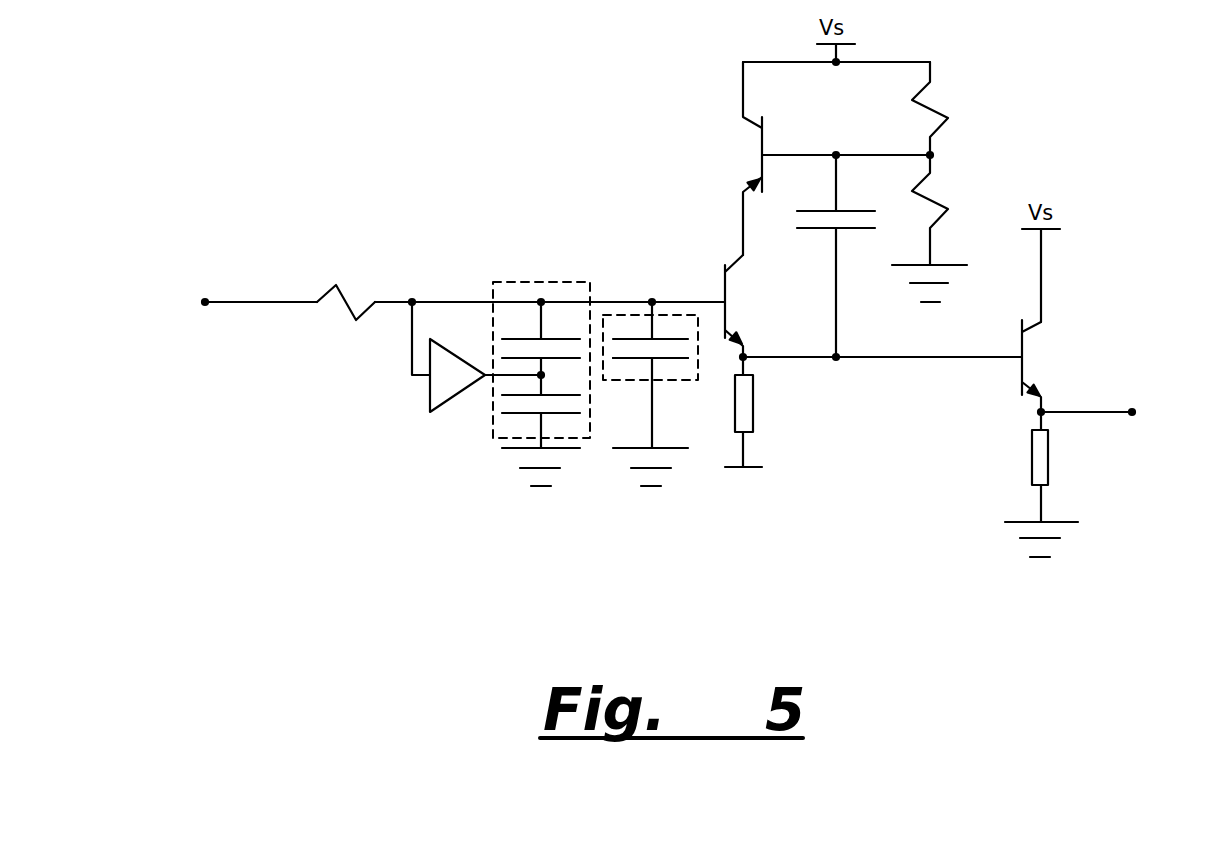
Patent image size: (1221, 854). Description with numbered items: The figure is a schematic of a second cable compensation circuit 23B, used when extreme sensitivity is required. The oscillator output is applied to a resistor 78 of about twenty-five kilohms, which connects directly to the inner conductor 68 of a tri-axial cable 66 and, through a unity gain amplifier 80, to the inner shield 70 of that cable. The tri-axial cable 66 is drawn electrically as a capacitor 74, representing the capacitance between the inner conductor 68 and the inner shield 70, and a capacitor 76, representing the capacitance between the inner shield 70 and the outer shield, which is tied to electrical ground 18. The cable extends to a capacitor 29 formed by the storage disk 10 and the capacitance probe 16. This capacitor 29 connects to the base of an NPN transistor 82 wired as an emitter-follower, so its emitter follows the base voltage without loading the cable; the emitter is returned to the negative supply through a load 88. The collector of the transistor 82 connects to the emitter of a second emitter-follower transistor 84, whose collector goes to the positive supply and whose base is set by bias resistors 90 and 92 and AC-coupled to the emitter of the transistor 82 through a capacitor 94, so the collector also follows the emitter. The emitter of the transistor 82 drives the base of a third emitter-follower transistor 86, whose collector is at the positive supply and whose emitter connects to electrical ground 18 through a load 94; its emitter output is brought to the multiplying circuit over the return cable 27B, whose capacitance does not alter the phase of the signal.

The cable compensation circuit 23B is at (278, 152).
The resistor 78 is at (343, 300).
The inner conductor 68 is at (443, 302).
The unity gain amplifier 80 is at (461, 387).
The inner shield 70 is at (503, 377).
The tri-axial cable 66 is at (527, 270).
The capacitor 74 is at (517, 338).
The capacitor 76 is at (517, 412).
The capacitor 29 is at (630, 310).
The capacitance probe 16 is at (662, 338).
The storage disk 10 is at (670, 358).
The electrical ground 18 is at (513, 449).
The transistor 84 is at (826, 158).
The transistor 82 is at (744, 315).
The load 88 is at (743, 405).
The AC coupling capacitor / load 94 is at (810, 211).
The bias resistor 90 is at (935, 110).
The bias resistor 92 is at (935, 200).
The transistor 86 is at (1042, 375).
The cable 27B is at (1068, 412).